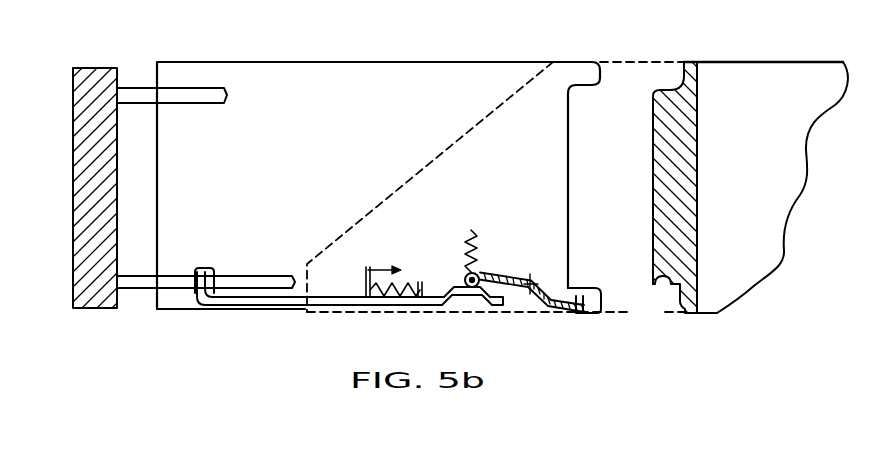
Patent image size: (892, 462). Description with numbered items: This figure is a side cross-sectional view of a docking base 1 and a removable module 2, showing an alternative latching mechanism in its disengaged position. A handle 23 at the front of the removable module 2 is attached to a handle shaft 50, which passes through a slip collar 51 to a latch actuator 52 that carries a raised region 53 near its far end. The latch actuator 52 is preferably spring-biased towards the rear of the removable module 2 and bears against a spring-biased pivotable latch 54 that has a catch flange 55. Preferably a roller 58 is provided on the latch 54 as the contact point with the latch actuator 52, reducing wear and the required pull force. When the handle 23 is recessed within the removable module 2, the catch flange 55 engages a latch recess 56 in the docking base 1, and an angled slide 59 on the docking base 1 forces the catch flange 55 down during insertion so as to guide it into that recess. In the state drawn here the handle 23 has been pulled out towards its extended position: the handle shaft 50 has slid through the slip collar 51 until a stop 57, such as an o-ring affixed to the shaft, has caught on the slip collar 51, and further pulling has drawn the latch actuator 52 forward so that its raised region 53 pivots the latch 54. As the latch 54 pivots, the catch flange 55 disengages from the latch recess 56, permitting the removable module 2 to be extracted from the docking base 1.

The docking base 1 is at (760, 61).
The removable module 2 is at (512, 61).
The handle 23 is at (72, 120).
The handle shaft 50 is at (283, 270).
The slip collar 51 is at (200, 272).
The latch actuator 52 is at (335, 292).
The raised region 53 is at (466, 303).
The latch 54 is at (532, 275).
The catch flange 55 is at (587, 292).
The latch recess 56 is at (670, 280).
The stop 57 is at (212, 273).
The roller 58 is at (467, 275).
The angled slide 59 is at (655, 285).